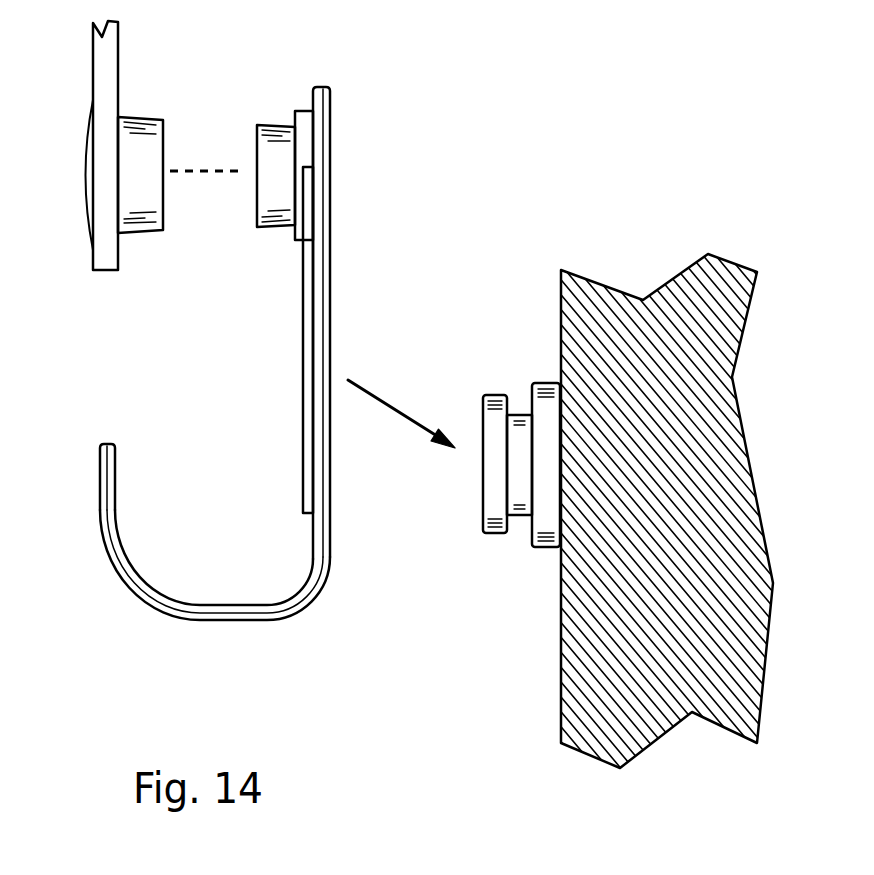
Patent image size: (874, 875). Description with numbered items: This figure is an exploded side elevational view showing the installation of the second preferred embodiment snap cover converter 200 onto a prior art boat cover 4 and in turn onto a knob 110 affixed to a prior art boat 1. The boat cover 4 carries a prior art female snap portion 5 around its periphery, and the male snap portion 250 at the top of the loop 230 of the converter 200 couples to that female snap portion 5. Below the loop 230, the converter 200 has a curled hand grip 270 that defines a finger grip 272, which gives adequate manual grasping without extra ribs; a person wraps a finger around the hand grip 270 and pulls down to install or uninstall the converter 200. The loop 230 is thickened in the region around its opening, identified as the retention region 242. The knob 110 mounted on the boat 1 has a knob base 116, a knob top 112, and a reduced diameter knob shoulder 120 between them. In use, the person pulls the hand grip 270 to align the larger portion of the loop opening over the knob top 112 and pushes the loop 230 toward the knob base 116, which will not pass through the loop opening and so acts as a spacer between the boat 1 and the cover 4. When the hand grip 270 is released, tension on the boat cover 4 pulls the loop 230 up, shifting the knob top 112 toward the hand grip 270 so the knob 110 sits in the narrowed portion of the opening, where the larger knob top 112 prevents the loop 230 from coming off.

The boat 1 is at (554, 263).
The boat cover 4 is at (102, 67).
The female snap portion 5 is at (153, 153).
The knob 110 is at (480, 509).
The knob top 112 is at (495, 508).
The knob base 116 is at (547, 550).
The knob shoulder 120 is at (520, 515).
The snap cover converter 200 is at (228, 376).
The loop 230 is at (298, 292).
The retention region 242 is at (310, 352).
The male snap portion 250 is at (270, 150).
The hand grip 270 is at (230, 627).
The finger grip 272 is at (105, 492).